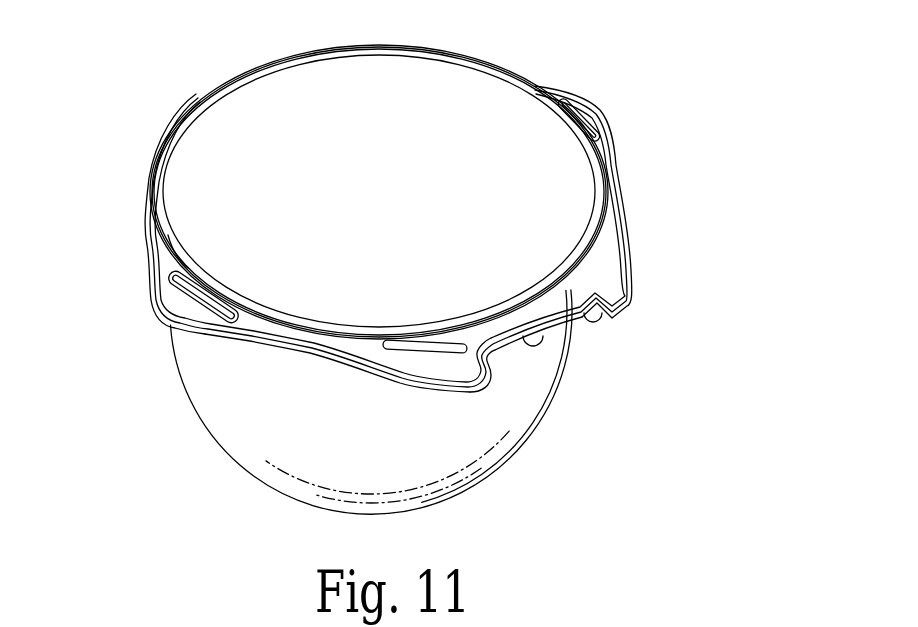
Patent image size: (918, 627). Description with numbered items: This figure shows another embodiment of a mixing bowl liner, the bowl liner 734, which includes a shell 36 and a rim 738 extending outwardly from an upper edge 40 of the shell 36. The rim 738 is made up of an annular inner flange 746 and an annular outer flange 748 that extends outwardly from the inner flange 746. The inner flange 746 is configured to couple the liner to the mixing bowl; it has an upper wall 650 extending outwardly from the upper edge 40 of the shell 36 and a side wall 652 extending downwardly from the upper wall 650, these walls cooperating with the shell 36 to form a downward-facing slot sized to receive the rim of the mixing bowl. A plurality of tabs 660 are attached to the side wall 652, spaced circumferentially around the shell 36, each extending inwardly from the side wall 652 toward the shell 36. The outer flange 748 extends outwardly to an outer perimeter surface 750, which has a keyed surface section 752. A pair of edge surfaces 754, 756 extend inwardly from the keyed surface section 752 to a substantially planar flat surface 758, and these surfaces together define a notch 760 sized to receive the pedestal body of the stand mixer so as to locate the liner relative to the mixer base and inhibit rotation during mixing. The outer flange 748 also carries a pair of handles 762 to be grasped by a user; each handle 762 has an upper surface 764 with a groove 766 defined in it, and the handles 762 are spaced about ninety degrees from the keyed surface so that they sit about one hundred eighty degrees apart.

The bowl liner 734 is at (674, 90).
The rim 738 is at (182, 93).
The upper edge 40 is at (187, 147).
The annular inner flange 746 is at (155, 167).
The annular outer flange 748 is at (136, 210).
The upper wall 650 is at (164, 205).
The side wall 652 is at (175, 247).
The tabs 660 is at (214, 274).
The upper surface 764 is at (168, 260).
The handles 762 is at (142, 285).
The groove 766 is at (166, 320).
The outer perimeter surface 750 is at (323, 362).
The edge surface 754 is at (490, 347).
The edge surface 756 is at (583, 287).
The flat surface 758 is at (533, 333).
The notch 760 is at (562, 366).
The keyed surface section 752 is at (633, 327).
The shell 36 is at (242, 440).